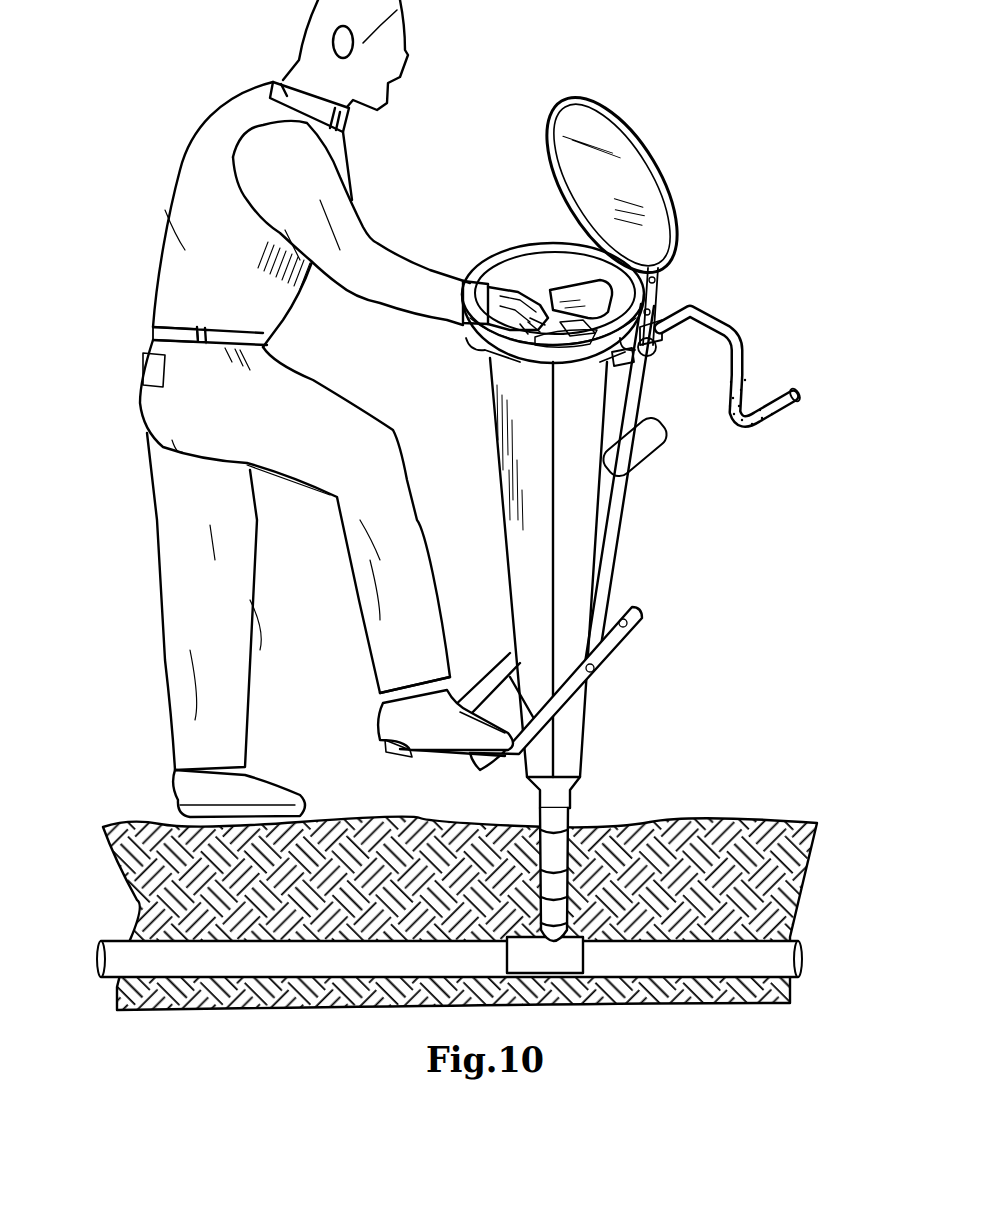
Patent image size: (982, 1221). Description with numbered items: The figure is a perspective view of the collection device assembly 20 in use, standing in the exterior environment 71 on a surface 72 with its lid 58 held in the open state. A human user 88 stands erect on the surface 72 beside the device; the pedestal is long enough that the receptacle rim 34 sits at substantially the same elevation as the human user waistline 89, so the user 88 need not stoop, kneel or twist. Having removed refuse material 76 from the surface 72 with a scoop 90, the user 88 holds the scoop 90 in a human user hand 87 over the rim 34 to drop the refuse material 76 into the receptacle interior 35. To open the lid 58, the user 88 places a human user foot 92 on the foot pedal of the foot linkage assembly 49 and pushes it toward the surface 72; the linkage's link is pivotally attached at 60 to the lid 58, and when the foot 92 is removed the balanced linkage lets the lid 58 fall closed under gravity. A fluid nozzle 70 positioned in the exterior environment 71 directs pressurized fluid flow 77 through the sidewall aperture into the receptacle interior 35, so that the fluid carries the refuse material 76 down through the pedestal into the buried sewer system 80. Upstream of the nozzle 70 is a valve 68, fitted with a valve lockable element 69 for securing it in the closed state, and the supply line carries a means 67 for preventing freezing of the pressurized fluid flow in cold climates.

The collection device assembly 20 is at (742, 168).
The receptacle rim 34 is at (470, 335).
The receptacle interior 35 is at (566, 279).
The foot linkage assembly 49 is at (455, 772).
The lid 58 is at (653, 152).
The pivotal attachment of link to lid 60 is at (657, 273).
The means for preventing freezing of the pressurized fluid flow 67 is at (738, 430).
The valve 68 is at (647, 343).
The valve lockable element 69 is at (660, 320).
The fluid nozzle 70 is at (623, 363).
The exterior environment 71 is at (714, 536).
The surface 72 is at (140, 822).
The refuse material 76 is at (540, 345).
The pressurized fluid flow 77 is at (808, 386).
The sewer system 80 is at (125, 957).
The human user hand 87 is at (507, 292).
The human user 88 is at (215, 165).
The human user waistline 89 is at (150, 337).
The scoop 90 is at (585, 288).
The human user foot 92 is at (385, 720).